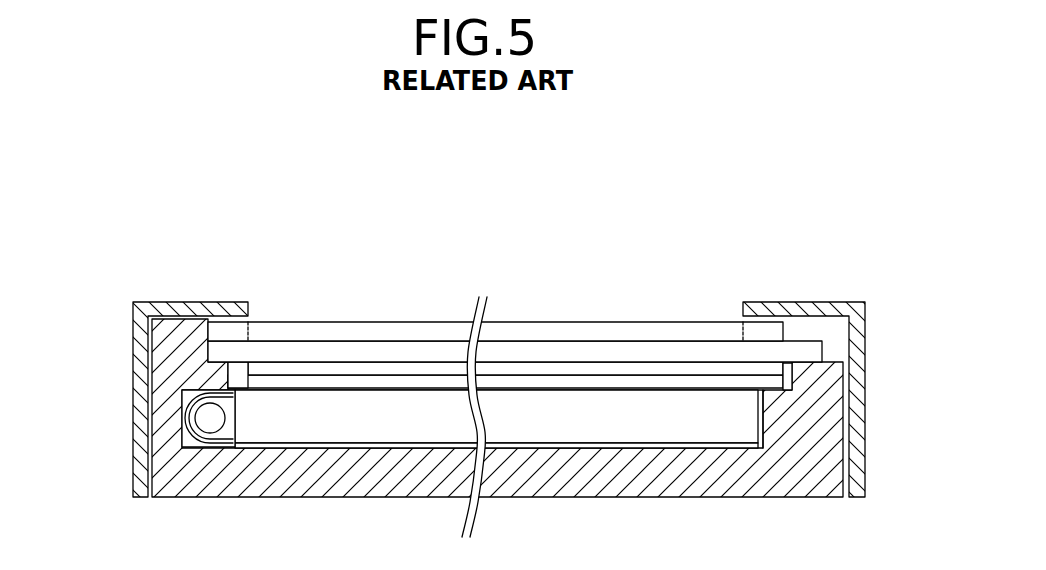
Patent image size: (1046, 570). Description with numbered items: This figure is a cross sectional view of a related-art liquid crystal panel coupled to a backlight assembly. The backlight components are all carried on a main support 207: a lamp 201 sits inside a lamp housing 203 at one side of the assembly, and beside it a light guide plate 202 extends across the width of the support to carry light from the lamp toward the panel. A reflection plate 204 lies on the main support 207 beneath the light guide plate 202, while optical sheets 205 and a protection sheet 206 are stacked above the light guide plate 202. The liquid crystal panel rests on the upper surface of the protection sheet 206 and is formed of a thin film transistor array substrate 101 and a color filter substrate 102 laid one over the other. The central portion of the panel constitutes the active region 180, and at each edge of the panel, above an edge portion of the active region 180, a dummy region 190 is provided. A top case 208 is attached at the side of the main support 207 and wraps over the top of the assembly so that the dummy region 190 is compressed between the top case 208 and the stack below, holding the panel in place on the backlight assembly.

The active region 180 is at (512, 291).
The thin film transistor array substrate 101 is at (522, 350).
The color filter substrate 102 is at (595, 333).
The dummy region 190 is at (232, 330).
The lamp 201 is at (207, 417).
The light guide plate 202 is at (388, 420).
The lamp housing 203 is at (190, 450).
The reflection plate 204 is at (327, 443).
The optical sheets 205 is at (773, 382).
The protection sheet 206 is at (773, 370).
The main support 207 is at (259, 473).
The top case 208 is at (140, 363).